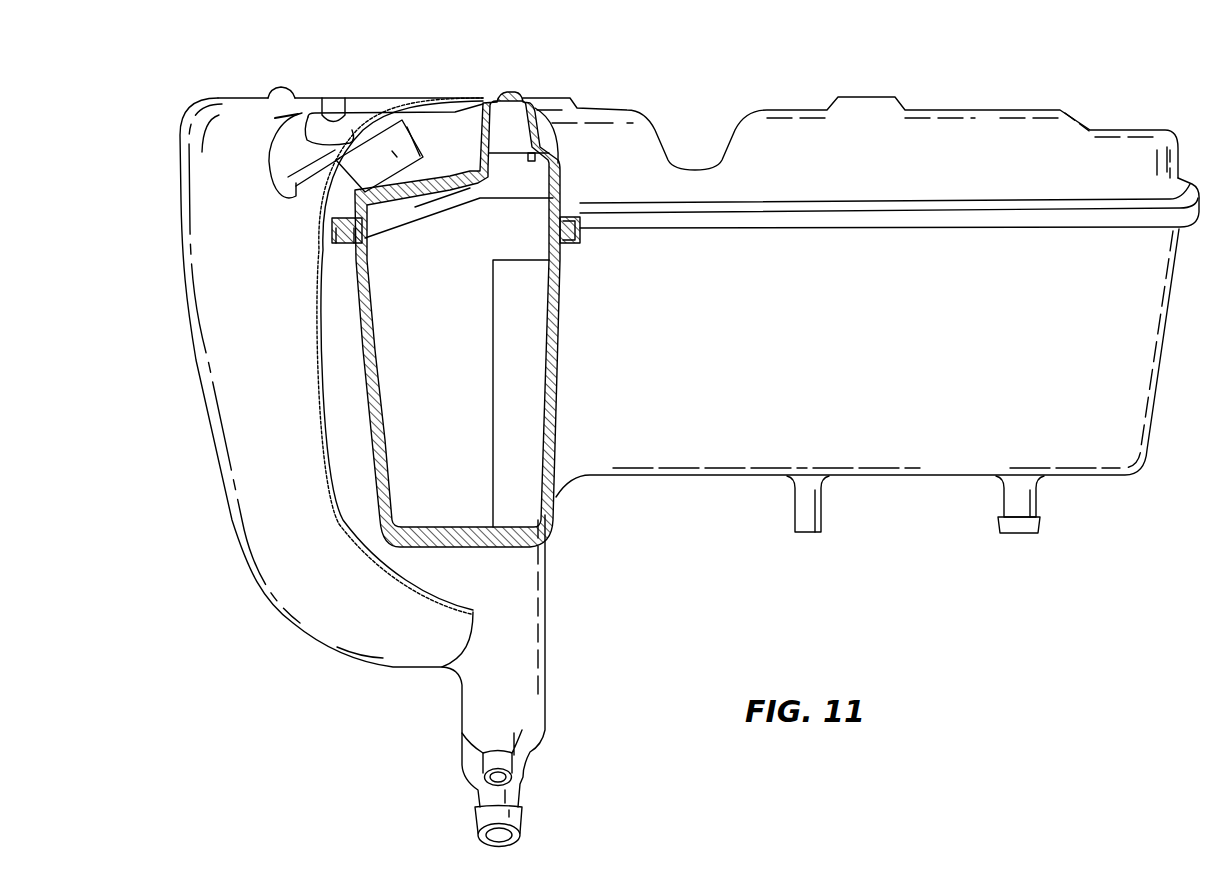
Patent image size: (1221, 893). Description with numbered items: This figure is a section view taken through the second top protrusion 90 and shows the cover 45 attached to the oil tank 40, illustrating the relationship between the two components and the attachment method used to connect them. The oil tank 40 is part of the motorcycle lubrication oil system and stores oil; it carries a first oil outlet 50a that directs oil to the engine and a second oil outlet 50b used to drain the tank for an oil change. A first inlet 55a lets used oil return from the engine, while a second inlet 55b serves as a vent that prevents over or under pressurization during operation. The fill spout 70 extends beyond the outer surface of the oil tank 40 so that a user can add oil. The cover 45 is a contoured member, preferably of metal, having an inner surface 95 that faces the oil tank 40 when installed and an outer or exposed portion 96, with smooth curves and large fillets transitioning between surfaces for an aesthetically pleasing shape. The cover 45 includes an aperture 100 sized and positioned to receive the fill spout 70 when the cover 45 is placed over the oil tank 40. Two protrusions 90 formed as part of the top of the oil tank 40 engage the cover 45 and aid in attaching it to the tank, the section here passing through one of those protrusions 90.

The oil tank 40 is at (885, 465).
The cover 45 is at (297, 600).
The first oil outlet 50a is at (483, 752).
The second oil outlet 50b is at (522, 807).
The first inlet 55a is at (1030, 503).
The second inlet 55b is at (797, 515).
The fill spout 70 is at (414, 130).
The top protrusions 90 is at (288, 87).
The inner surface 95 is at (267, 482).
The exposed portion 96 is at (327, 460).
The aperture 100 is at (350, 112).